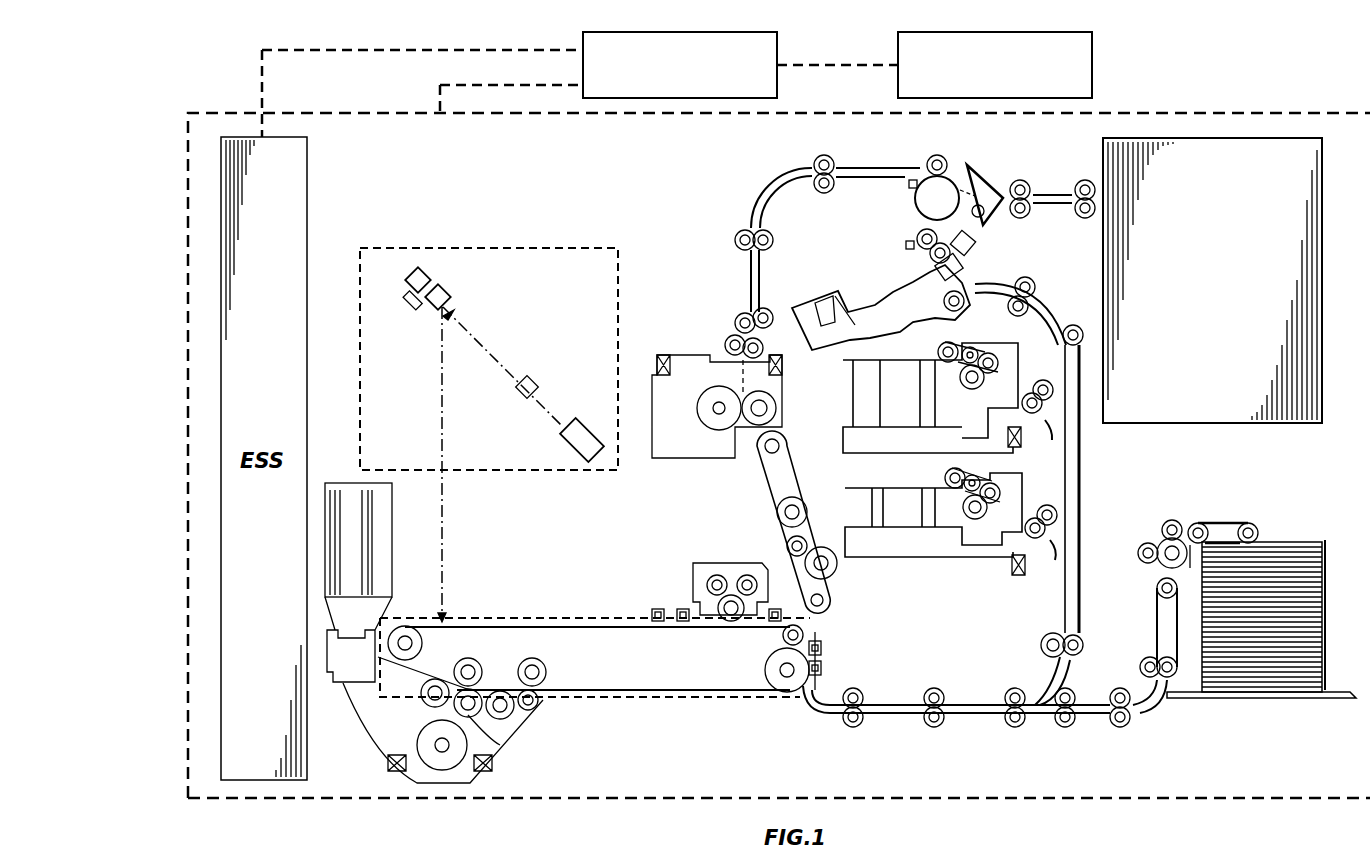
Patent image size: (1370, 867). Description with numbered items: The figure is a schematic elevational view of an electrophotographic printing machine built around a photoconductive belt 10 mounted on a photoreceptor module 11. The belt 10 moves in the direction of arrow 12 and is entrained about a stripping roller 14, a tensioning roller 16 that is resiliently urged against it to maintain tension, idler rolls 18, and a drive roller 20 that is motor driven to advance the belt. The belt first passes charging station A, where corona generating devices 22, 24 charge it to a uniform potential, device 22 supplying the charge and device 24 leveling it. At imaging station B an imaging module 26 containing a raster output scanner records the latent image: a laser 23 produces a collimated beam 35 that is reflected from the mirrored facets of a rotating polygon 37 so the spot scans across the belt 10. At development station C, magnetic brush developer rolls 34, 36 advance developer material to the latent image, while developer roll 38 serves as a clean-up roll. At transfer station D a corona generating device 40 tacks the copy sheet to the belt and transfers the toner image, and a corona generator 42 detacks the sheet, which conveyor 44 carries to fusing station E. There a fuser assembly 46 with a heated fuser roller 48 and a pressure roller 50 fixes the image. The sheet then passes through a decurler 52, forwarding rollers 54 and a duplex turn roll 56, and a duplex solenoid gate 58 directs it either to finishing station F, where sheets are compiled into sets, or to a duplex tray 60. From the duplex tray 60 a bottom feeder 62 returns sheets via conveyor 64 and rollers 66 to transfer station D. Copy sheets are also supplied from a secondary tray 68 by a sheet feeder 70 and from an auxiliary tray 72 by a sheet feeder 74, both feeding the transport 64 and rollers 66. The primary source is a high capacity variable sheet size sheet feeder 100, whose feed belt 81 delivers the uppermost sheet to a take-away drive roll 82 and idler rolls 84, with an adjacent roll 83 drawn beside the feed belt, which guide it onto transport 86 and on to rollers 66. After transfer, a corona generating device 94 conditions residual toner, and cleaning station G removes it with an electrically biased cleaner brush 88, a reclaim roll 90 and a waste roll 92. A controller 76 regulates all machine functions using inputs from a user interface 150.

The photoconductive belt 10 is at (614, 690).
The photoreceptor module 11 is at (586, 612).
The arrow 12 is at (680, 679).
The stripping roller 14 is at (783, 637).
The tensioning roller 16 is at (405, 626).
The idler rolls 18 is at (532, 660).
The drive roller 20 is at (793, 695).
The corona generating device 22 is at (682, 608).
The laser 23 is at (583, 432).
The corona generating device 24 is at (652, 613).
The imaging module 26 is at (553, 474).
The magnetic brush developer roll 34 is at (430, 700).
The collimated beam 35 is at (440, 405).
The magnetic brush developer roll 36 is at (495, 740).
The rotating polygon 37 is at (430, 283).
The developer roll 38 is at (528, 712).
The corona generating device 40 is at (825, 672).
The corona generator 42 is at (825, 646).
The conveyor 44 is at (808, 490).
The fuser assembly 46 is at (698, 350).
The heated fuser roller 48 is at (710, 427).
The pressure roller 50 is at (777, 410).
The decurler 52 is at (735, 328).
The forwarding rollers 54 is at (830, 155).
The duplex turn roll 56 is at (913, 206).
The duplex solenoid gate 58 is at (990, 185).
The duplex tray 60 is at (865, 322).
The bottom feeder 62 is at (962, 313).
The conveyor 64 is at (1082, 492).
The rollers 66 is at (934, 728).
The secondary tray 68 is at (885, 455).
The sheet feeder 70 is at (985, 343).
The auxiliary tray 72 is at (920, 556).
The sheet feeder 74 is at (985, 480).
The controller 76 is at (790, 40).
The feed belt 81 is at (1225, 523).
The take-away drive roll 82 is at (1160, 542).
The roller 83 is at (1195, 523).
The idler rolls 84 is at (1162, 530).
The transport 86 is at (1155, 615).
The cleaner brush 88 is at (722, 617).
The reclaim roll 90 is at (750, 575).
The waste roll 92 is at (712, 575).
The corona generating device 94 is at (790, 615).
The high capacity variable sheet size sheet feeder 100 is at (1334, 520).
The user interface 150 is at (1092, 62).
The charging station A is at (659, 596).
The imaging station B is at (540, 607).
The development station C is at (363, 735).
The transfer station D is at (832, 660).
The fusing station E is at (657, 342).
The finishing station F is at (1250, 432).
The cleaning station G is at (730, 552).